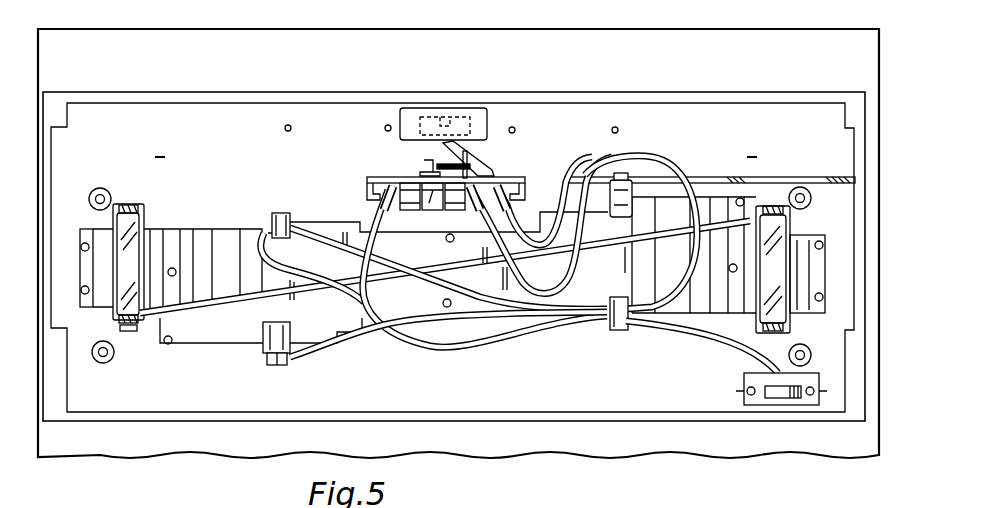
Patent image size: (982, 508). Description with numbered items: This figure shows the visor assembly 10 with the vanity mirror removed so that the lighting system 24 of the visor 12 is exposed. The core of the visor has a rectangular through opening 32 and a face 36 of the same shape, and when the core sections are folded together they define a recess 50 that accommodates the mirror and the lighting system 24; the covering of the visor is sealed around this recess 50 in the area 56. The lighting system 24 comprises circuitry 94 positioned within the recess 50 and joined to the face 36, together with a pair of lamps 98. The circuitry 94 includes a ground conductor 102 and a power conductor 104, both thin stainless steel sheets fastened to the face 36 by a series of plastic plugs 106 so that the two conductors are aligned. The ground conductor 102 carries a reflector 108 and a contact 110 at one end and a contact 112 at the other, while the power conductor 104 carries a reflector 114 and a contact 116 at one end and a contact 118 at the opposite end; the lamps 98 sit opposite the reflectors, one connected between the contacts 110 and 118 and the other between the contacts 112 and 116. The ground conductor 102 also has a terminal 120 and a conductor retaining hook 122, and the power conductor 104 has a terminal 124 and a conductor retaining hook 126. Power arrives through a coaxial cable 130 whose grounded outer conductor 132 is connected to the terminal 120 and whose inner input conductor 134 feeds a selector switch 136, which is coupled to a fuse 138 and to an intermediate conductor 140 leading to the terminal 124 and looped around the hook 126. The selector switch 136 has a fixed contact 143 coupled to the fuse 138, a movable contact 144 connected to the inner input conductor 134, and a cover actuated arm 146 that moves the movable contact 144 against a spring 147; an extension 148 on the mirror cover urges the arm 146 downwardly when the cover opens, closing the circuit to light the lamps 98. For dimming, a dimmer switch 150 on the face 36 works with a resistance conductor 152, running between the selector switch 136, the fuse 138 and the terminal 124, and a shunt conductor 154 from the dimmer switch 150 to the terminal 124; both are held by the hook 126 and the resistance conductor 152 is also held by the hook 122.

The visor assembly 10 is at (493, 464).
The visor 12 is at (131, 461).
The lighting system 24 is at (220, 226).
The opening 32 is at (55, 163).
The face 36 is at (263, 117).
The recess 50 is at (152, 104).
The sealing area 56 is at (77, 423).
The circuitry 94 is at (575, 170).
The lamps 98 is at (778, 248).
The ground conductor 102 is at (310, 219).
The power conductor 104 is at (192, 344).
The plastic plugs 106 is at (80, 247).
The reflector 108 is at (112, 312).
The contact 110 is at (127, 205).
The contact 112 is at (756, 212).
The reflector 114 is at (780, 337).
The contact 116 is at (803, 344).
The contact 118 is at (127, 333).
The terminal 120 is at (659, 180).
The conductor retaining hook 122 is at (278, 212).
The terminal 124 is at (281, 368).
The conductor retaining hook 126 is at (619, 331).
The coaxial cable 130 is at (783, 175).
The outer conductor 132 is at (716, 174).
The inner input conductor 134 is at (555, 193).
The selector switch 136 is at (492, 166).
The fuse 138 is at (407, 213).
The intermediate conductor 140 is at (442, 349).
The fixed contact 143 is at (437, 170).
The movable contact 144 is at (440, 163).
The cover actuated arm 146 is at (457, 147).
The spring 147 is at (443, 153).
The extension 148 is at (458, 118).
The dimmer switch 150 is at (744, 380).
The resistance conductor 152 is at (571, 280).
The shunt conductor 154 is at (363, 335).